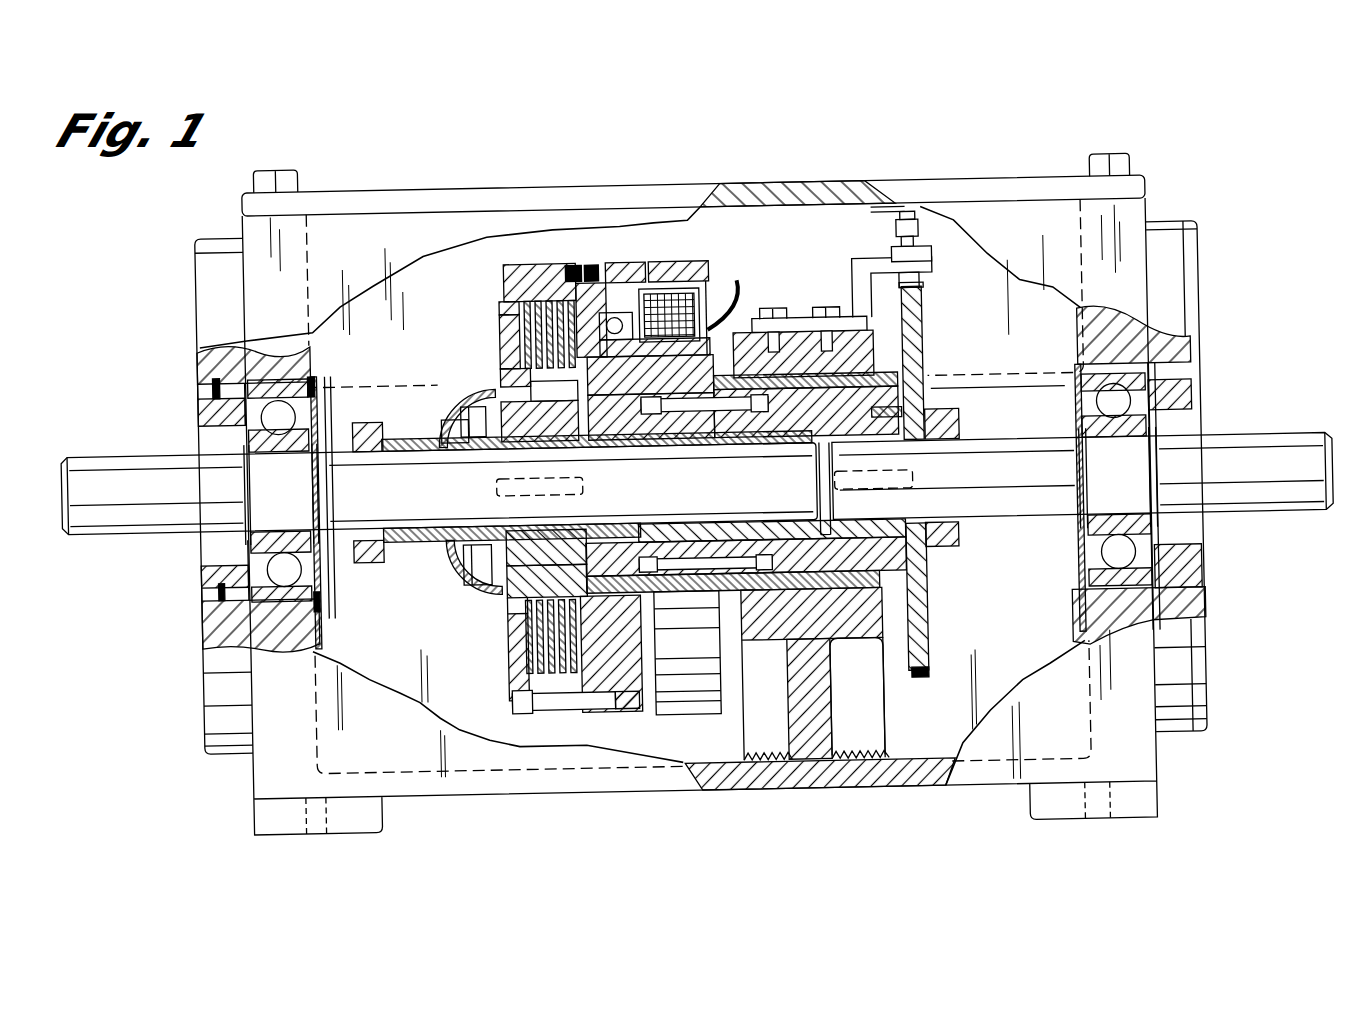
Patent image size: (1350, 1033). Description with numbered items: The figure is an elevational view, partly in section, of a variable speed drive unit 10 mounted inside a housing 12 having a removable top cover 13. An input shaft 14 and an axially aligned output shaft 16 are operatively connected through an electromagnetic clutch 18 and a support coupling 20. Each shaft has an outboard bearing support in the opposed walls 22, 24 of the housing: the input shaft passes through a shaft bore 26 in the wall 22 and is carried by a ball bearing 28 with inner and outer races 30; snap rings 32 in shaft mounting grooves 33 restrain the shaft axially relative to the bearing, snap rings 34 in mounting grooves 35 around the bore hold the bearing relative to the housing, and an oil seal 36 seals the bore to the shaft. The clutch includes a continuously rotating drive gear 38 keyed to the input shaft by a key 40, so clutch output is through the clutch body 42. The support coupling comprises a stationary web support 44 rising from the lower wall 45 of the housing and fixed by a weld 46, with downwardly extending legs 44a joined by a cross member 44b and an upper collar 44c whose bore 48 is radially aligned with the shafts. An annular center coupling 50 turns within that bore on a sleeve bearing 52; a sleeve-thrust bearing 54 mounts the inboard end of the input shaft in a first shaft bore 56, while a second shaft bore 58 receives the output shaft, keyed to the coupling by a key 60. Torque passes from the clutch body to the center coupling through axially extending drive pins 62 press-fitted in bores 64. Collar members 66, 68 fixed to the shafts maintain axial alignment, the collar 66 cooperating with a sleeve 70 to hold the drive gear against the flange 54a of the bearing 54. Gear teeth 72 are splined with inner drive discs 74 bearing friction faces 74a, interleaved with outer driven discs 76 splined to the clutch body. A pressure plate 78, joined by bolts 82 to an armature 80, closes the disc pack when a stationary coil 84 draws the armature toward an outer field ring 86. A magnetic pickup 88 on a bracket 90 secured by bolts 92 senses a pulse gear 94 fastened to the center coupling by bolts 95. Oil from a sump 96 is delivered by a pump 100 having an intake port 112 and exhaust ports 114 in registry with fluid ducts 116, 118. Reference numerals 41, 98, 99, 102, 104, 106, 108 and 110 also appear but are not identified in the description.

The variable speed drive unit 10 is at (1206, 332).
The housing 12 is at (1148, 768).
The removable top cover 13 is at (822, 188).
The input shaft 14 is at (100, 458).
The output shaft 16 is at (1270, 522).
The electromagnetic clutch 18 is at (650, 722).
The support coupling 20 is at (890, 356).
The wall 22 is at (212, 630).
The wall 24 is at (1208, 604).
The shaft bore 26 is at (210, 600).
The ball bearing 28 is at (322, 622).
The inner and outer races 30 is at (312, 578).
The snap rings 32 is at (255, 522).
The shaft mounting grooves 33 is at (250, 478).
The snap rings 34 is at (330, 376).
The mounting grooves 35 is at (302, 390).
The oil seal 36 is at (205, 412).
The drive gear 38 is at (502, 622).
The key 40 is at (594, 480).
The cavity 41 is at (857, 696).
The clutch body 42 is at (672, 440).
The web support 44 is at (883, 712).
The legs 44a is at (752, 732).
The cross member 44b is at (800, 700).
The collar 44c is at (738, 628).
The lower wall 45 is at (895, 786).
The weld 46 is at (788, 783).
The bore 48 is at (930, 606).
The center coupling 50 is at (905, 566).
The sleeve bearing 52 is at (926, 375).
The sleeve-thrust bearing 54 is at (680, 523).
The flange 54a is at (585, 458).
The first shaft bore 56 is at (812, 522).
The second shaft bore 58 is at (922, 505).
The key 60 is at (918, 476).
The drive pins 62 is at (745, 414).
The bores 64 is at (780, 402).
The collar member 66 is at (370, 423).
The collar member 68 is at (960, 427).
The sleeve 70 is at (410, 453).
The gear teeth 72 is at (500, 385).
The inner drive discs 74 is at (520, 352).
The friction face 74a is at (510, 652).
The outer driven discs 76 is at (548, 296).
The pressure plate 78 is at (500, 315).
The armature 80 is at (645, 264).
The bolts 82 is at (520, 712).
The stationary coil 84 is at (722, 290).
The outer field ring 86 is at (710, 266).
The magnetic pickup 88 is at (937, 284).
The bracket 90 is at (858, 258).
The bolts 92 is at (788, 307).
The pulse gear 94 is at (925, 310).
The bolts 95 is at (902, 410).
The oil sump 96 is at (1030, 376).
The valve 98 is at (602, 268).
The terminal 99 is at (578, 266).
The pump 100 is at (440, 420).
The piston 102 is at (546, 547).
The sleeve 104 is at (485, 520).
The spring retainer 106 is at (472, 595).
The cylinder 108 is at (547, 579).
The spring 110 is at (455, 390).
The intake port 112 is at (446, 566).
The exhaust ports 114 is at (540, 421).
The fluid duct means 116 is at (651, 411).
The fluid duct means 118 is at (643, 336).